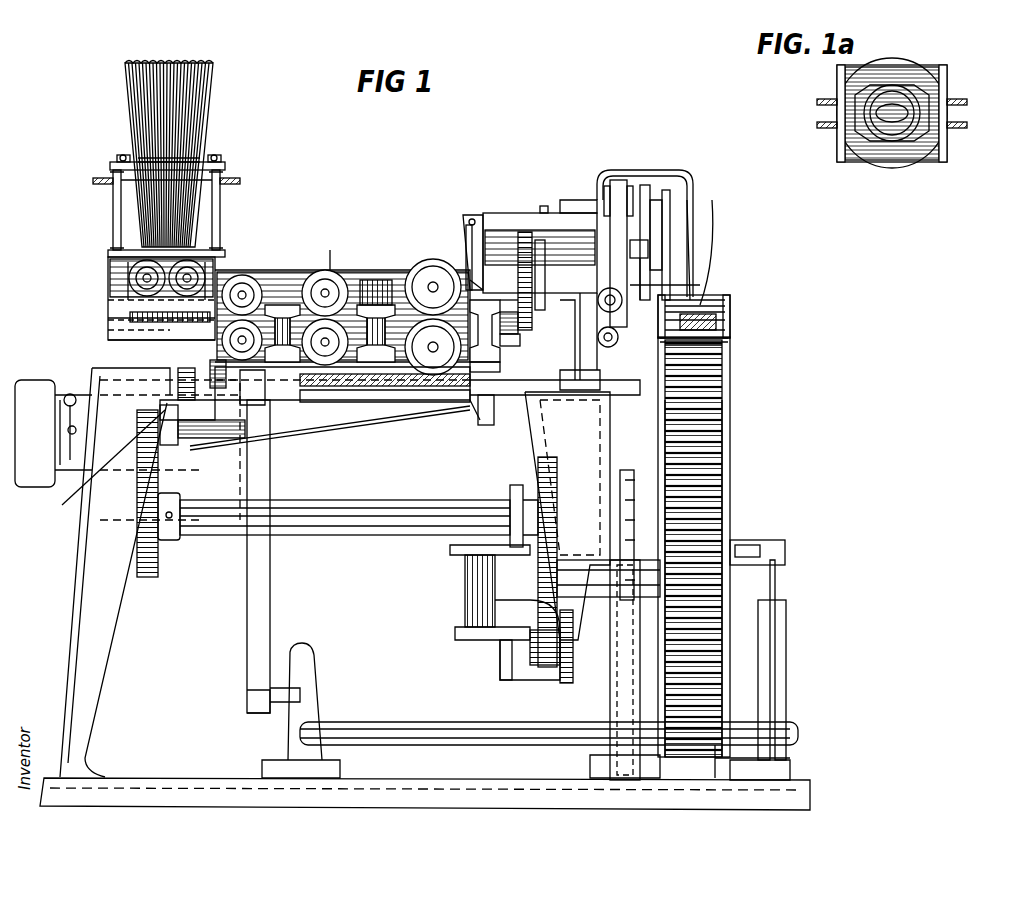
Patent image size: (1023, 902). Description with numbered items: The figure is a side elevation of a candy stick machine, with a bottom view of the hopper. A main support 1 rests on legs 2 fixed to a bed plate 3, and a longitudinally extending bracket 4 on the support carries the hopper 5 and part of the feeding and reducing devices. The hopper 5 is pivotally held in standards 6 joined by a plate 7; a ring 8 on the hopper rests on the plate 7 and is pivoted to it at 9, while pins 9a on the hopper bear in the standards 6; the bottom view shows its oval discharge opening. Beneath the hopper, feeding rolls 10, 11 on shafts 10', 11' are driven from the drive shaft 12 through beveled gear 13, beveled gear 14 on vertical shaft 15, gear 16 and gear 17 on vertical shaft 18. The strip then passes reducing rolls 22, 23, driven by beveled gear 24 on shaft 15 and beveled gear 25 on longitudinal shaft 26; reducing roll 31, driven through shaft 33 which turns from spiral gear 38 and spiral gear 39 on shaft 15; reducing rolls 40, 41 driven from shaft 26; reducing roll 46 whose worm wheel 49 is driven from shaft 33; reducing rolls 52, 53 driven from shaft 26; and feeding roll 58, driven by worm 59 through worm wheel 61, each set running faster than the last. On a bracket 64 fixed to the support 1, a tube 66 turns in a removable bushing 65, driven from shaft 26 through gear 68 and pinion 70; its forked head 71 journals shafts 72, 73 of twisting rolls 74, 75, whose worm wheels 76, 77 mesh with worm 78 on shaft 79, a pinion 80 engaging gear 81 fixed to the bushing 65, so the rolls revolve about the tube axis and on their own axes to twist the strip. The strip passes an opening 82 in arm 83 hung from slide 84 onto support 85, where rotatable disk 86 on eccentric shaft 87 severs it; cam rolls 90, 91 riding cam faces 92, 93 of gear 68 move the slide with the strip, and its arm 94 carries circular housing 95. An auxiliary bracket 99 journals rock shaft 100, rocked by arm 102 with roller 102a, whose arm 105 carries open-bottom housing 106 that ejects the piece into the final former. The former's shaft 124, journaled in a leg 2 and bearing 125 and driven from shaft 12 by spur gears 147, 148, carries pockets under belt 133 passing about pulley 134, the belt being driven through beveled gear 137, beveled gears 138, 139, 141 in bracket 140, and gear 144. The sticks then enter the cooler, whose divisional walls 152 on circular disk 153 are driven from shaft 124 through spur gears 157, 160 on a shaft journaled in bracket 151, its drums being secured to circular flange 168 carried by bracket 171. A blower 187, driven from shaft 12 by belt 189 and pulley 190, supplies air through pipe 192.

In FIG. 1, the main support 1 is at (525, 398).
In FIG. 1, the legs 2 is at (598, 430).
In FIG. 1, the bed plate 3 is at (168, 778).
In FIG. 1, the longitudinally extending bracket 4 is at (265, 275).
In FIG. 1, the hopper 5 is at (195, 132).
In FIG. 1A, the hopper 5 is at (884, 165).
In FIG. 1, the standards 6 is at (113, 214).
In FIG. 1A, the standards 6 is at (840, 136).
In FIG. 1, the plate 7 is at (225, 164).
In FIG. 1A, the plate 7 is at (940, 160).
In FIG. 1, the ring 8 is at (165, 155).
In FIG. 1, the pivot 9 is at (120, 158).
In FIG. 1A, the pivot 9 is at (967, 125).
In FIG. 1, the pins 9a is at (93, 181).
In FIG. 1A, the pins 9a is at (817, 125).
In FIG. 1, the feeding roll 10 is at (145, 298).
In FIG. 1, the shaft of feeding roll 10' is at (150, 245).
In FIG. 1, the feeding roll 11 is at (198, 264).
In FIG. 1, the shaft of feeding roll 11' is at (193, 253).
In FIG. 1, the drive shaft 12 is at (205, 440).
In FIG. 1, the beveled gear 13 is at (172, 440).
In FIG. 1, the beveled gear 14 is at (165, 400).
In FIG. 1, the vertical shaft 15 is at (135, 340).
In FIG. 1, the gear 16 is at (216, 367).
In FIG. 1, the gear 17 is at (160, 322).
In FIG. 1, the vertical shaft 18 is at (244, 278).
In FIG. 1, the reducing roll 22 is at (283, 305).
In FIG. 1, the reducing roll 23 is at (278, 395).
In FIG. 1, the beveled gear 24 is at (112, 300).
In FIG. 1, the beveled gear 25 is at (330, 278).
In FIG. 1, the longitudinal shaft 26 is at (378, 282).
In FIG. 1, the reducing roll 31 is at (290, 400).
In FIG. 1, the shaft 33 is at (340, 402).
In FIG. 1, the spiral gear 38 is at (178, 380).
In FIG. 1, the spiral gear 39 is at (160, 407).
In FIG. 1, the reducing roll 40 is at (335, 265).
In FIG. 1, the reducing roll 41 is at (378, 420).
In FIG. 1, the reducing roll 46 is at (378, 305).
In FIG. 1, the worm wheel 49 is at (392, 386).
In FIG. 1, the reducing roll 52 is at (433, 287).
In FIG. 1, the reducing roll 53 is at (433, 347).
In FIG. 1, the feeding roll 58 is at (485, 329).
In FIG. 1, the worm 59 is at (482, 425).
In FIG. 1, the worm wheel 61 is at (470, 420).
In FIG. 1, the main bracket 64 is at (522, 213).
In FIG. 1, the removable bushing 65 is at (511, 345).
In FIG. 1, the hollow shaft or tube 66 is at (491, 354).
In FIG. 1, the gear 68 is at (540, 240).
In FIG. 1, the pinion 70 is at (511, 318).
In FIG. 1, the forked head 71 is at (582, 400).
In FIG. 1, the shaft 72 is at (700, 290).
In FIG. 1, the shaft 73 is at (728, 320).
In FIG. 1, the feeding twisting roll 74 is at (725, 300).
In FIG. 1, the feeding twisting roll 75 is at (730, 334).
In FIG. 1, the worm wheel 76 is at (613, 293).
In FIG. 1, the worm wheel 77 is at (618, 342).
In FIG. 1, the worm 78 is at (725, 312).
In FIG. 1, the longitudinally extending shaft 79 is at (573, 380).
In FIG. 1, the pinion 80 is at (536, 484).
In FIG. 1, the gear 81 is at (614, 200).
In FIG. 1, the opening 82 is at (700, 348).
In FIG. 1, the downwardly extending arm 83 is at (700, 250).
In FIG. 1, the slide 84 is at (455, 252).
In FIG. 1, the support 85 is at (730, 330).
In FIG. 1, the rotatable disk 86 is at (668, 195).
In FIG. 1, the shaft 87 is at (645, 190).
In FIG. 1, the cam roll 90 is at (520, 260).
In FIG. 1, the cam roll 91 is at (575, 200).
In FIG. 1, the cam face 92 is at (470, 215).
In FIG. 1, the cam face 93 is at (648, 250).
In FIG. 1, the downwardly-extending arm 94 is at (467, 271).
In FIG. 1, the circular housing 95 is at (506, 298).
In FIG. 1, the auxiliary bracket 99 is at (693, 180).
In FIG. 1, the rock shaft 100 is at (660, 210).
In FIG. 1, the arm 102 is at (607, 190).
In FIG. 1, the roller 102a is at (630, 190).
In FIG. 1, the downwardly extending arm 105 is at (645, 268).
In FIG. 1, the open-bottom housing 106 is at (730, 326).
In FIG. 1, the longitudinally extending shaft 124 is at (340, 535).
In FIG. 1, the bearing 125 is at (648, 500).
In FIG. 1, the belt 133 is at (730, 306).
In FIG. 1, the pulley 134 is at (728, 340).
In FIG. 1, the beveled gear 137 is at (512, 486).
In FIG. 1, the beveled gear 138 is at (460, 556).
In FIG. 1, the beveled gear 139 is at (455, 632).
In FIG. 1, the bracket 140 is at (465, 595).
In FIG. 1, the beveled gear 141 is at (500, 665).
In FIG. 1, the gear 144 is at (568, 683).
In FIG. 1, the spur gear 147 is at (94, 465).
In FIG. 1, the spur gear 148 is at (160, 570).
In FIG. 1, the bracket 151 is at (617, 613).
In FIG. 1, the divisional walls 152 is at (722, 508).
In FIG. 1, the circular disk 153 is at (660, 440).
In FIG. 1, the spur gear 157 is at (538, 461).
In FIG. 1, the spur gear 160 is at (532, 660).
In FIG. 1, the circular flange 168 is at (730, 534).
In FIG. 1, the bracket 171 is at (770, 640).
In FIG. 1, the blower 187 is at (312, 655).
In FIG. 1, the belt 189 is at (270, 562).
In FIG. 1, the pulley 190 is at (247, 690).
In FIG. 1, the pipe 192 is at (420, 745).